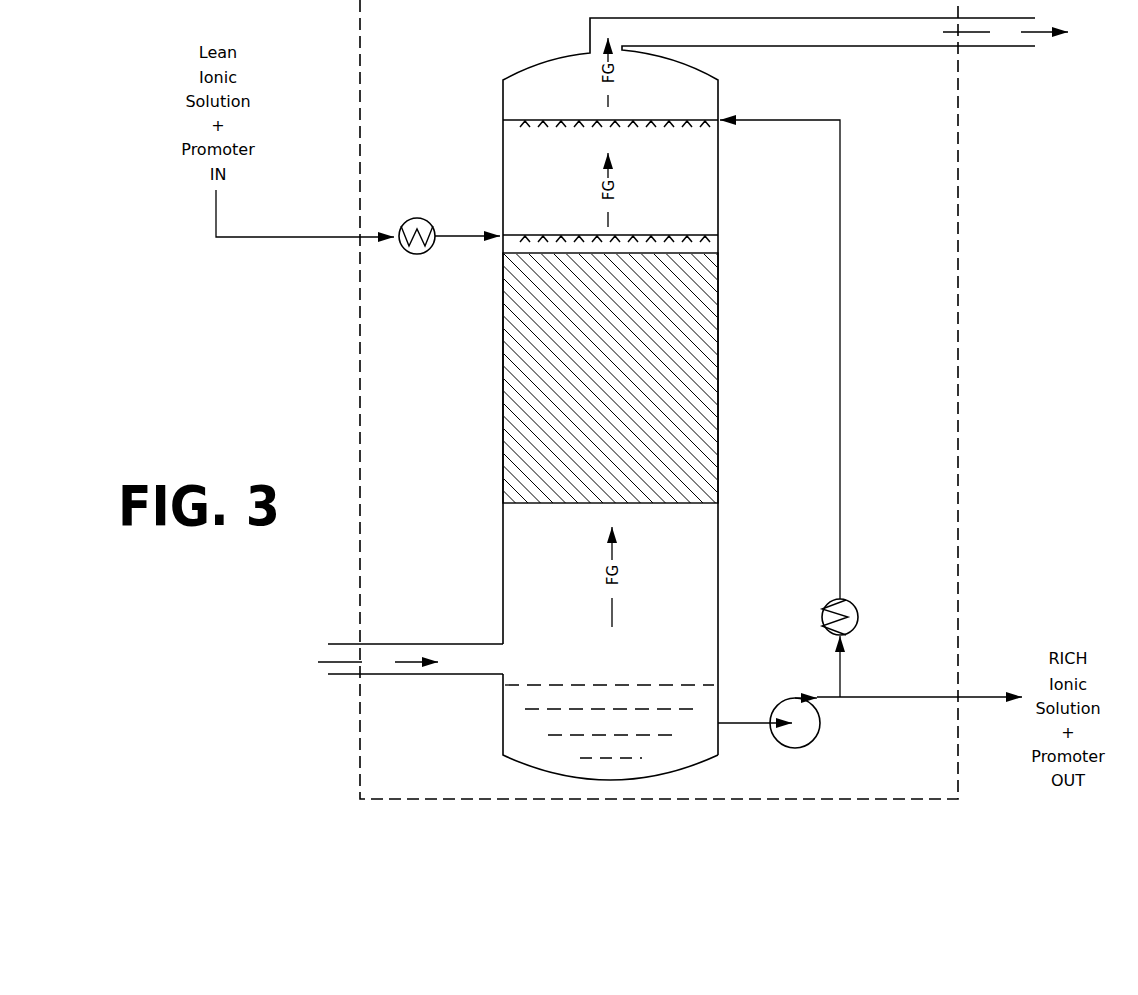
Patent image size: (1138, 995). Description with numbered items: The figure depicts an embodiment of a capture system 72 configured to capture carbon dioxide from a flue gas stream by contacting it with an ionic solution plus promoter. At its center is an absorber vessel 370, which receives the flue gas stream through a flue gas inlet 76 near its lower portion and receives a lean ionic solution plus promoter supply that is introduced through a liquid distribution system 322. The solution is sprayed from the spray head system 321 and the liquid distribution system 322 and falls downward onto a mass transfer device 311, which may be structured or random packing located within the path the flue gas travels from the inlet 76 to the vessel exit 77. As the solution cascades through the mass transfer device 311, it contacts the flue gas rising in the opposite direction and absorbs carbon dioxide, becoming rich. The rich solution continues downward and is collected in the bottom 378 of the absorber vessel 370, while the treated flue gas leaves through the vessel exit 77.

The capture system 72 is at (388, 22).
The absorber vessel 370 is at (500, 87).
The spray head system 321 is at (530, 129).
The liquid distribution system 322 is at (518, 241).
The mass transfer device 311 is at (535, 411).
The flue gas inlet 76 is at (350, 648).
The vessel exit 77 is at (1011, 48).
The bottom of the absorber vessel 378 is at (696, 690).